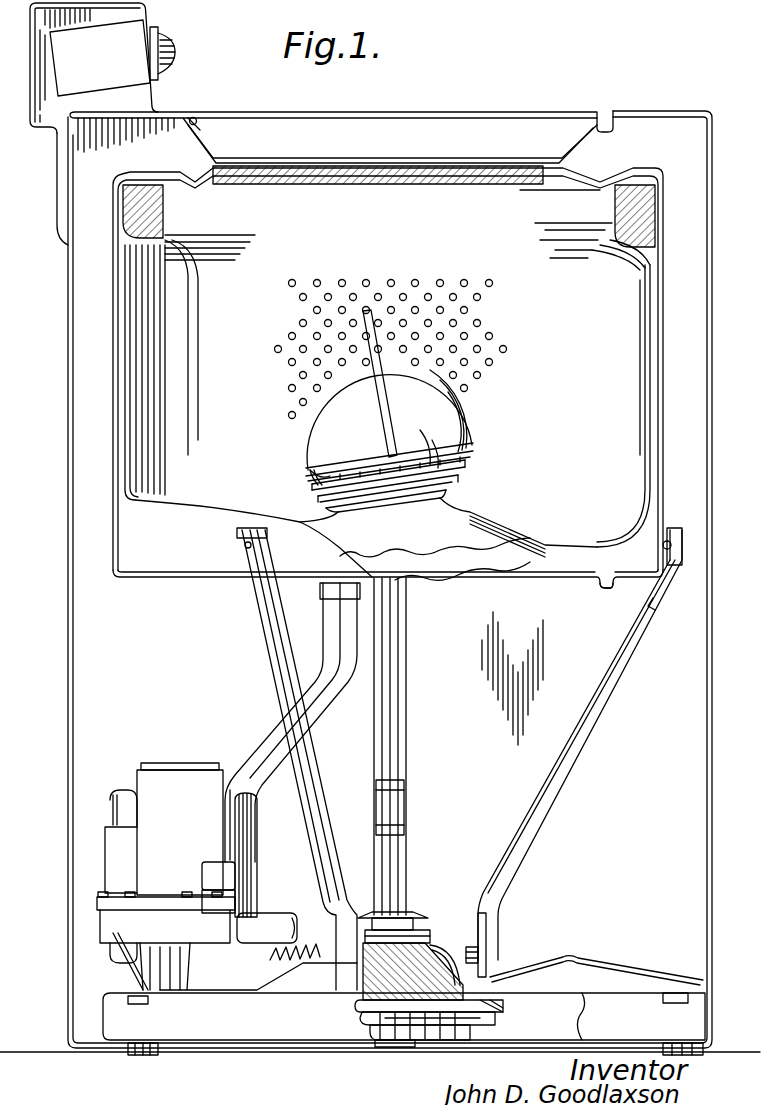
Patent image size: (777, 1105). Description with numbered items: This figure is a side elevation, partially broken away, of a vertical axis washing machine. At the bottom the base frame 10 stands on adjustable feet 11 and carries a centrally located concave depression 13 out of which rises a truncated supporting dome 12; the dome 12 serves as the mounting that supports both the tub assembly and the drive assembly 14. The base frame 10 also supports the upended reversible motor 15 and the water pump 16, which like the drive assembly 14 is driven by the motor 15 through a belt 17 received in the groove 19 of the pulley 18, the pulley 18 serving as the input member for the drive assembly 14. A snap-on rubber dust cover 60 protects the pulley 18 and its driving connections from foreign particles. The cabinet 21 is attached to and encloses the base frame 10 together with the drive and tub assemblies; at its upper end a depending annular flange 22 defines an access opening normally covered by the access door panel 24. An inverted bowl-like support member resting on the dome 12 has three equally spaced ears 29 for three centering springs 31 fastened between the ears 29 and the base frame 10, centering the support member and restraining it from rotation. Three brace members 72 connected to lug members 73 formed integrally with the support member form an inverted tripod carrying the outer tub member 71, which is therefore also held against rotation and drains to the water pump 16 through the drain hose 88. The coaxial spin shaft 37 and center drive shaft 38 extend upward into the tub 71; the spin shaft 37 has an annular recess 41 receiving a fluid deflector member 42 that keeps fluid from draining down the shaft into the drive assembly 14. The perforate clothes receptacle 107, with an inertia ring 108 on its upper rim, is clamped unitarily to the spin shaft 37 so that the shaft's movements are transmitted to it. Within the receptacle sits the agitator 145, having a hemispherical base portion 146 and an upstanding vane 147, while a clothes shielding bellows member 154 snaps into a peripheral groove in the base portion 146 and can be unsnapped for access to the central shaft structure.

The base frame 10 is at (270, 1040).
The adjustable feet 11 is at (133, 1057).
The truncated supporting dome 12 is at (438, 947).
The concave depression 13 is at (525, 966).
The drive assembly 14 is at (420, 993).
The reversible motor 15 is at (111, 810).
The water pump 16 is at (116, 926).
The belt 17 is at (506, 1008).
The pulley 18 is at (497, 1020).
The groove of pulley 19 is at (470, 1018).
The cabinet 21 is at (713, 722).
The depending annular flange 22 is at (194, 140).
The access door panel 24 is at (455, 110).
The ears 29 is at (308, 954).
The centering springs 31 is at (278, 966).
The spin shaft 37 is at (408, 730).
The center drive shaft 38 is at (406, 806).
The annular recess 41 is at (396, 912).
The fluid deflector member 42 is at (430, 916).
The snap-on rubber dust cover 60 is at (385, 1047).
The outer tub member 71 is at (577, 582).
The brace members 72 is at (265, 657).
The lug members 73 is at (478, 930).
The drain hose 88 is at (268, 728).
The perforate clothes receptacle 107 is at (548, 540).
The inertia ring 108 is at (614, 200).
The agitator 145 is at (486, 416).
The hemispherical base portion 146 is at (475, 441).
The upstanding vane 147 is at (382, 420).
The clothes shielding bellows member 154 is at (466, 486).